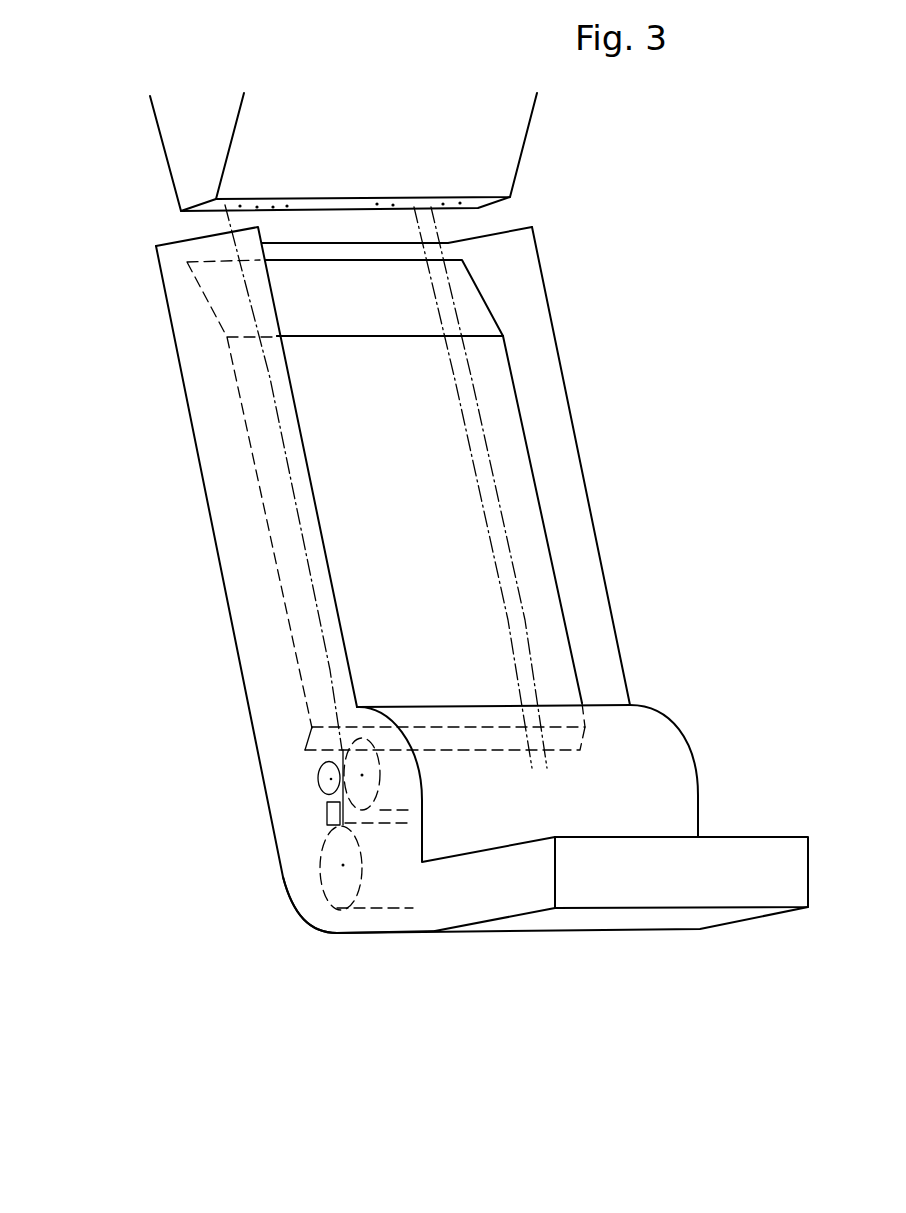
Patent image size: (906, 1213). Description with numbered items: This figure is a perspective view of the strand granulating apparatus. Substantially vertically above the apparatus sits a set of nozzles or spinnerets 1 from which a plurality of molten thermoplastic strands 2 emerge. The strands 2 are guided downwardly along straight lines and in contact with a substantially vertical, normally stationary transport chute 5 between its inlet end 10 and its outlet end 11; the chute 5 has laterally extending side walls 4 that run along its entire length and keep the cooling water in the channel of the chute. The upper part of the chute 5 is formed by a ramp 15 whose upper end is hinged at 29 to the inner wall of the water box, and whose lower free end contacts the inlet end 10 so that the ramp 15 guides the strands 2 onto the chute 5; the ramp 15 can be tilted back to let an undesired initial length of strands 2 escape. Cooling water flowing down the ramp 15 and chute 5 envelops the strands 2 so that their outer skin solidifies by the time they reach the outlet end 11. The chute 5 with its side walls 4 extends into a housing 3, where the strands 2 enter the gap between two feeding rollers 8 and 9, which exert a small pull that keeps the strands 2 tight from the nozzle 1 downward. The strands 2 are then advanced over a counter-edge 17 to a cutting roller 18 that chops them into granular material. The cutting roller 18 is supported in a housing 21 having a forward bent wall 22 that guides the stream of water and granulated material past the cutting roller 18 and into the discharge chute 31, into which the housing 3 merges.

The nozzle 1 is at (502, 160).
The strands 2 is at (232, 232).
The hinge 29 is at (450, 252).
The ramp 15 is at (472, 315).
The inlet end of the chute 10 is at (483, 335).
The side walls 4 is at (545, 403).
The transport chute 5 is at (510, 480).
The housing 3 is at (657, 732).
The outlet end of the chute 11 is at (322, 727).
The feeding roller 8 is at (352, 762).
The feeding roller 9 is at (325, 778).
The counter-edge 17 is at (328, 815).
The cutting roller 18 is at (340, 887).
The forward bent wall 22 is at (312, 925).
The discharge chute 31 is at (482, 898).
The housing 21 is at (623, 927).